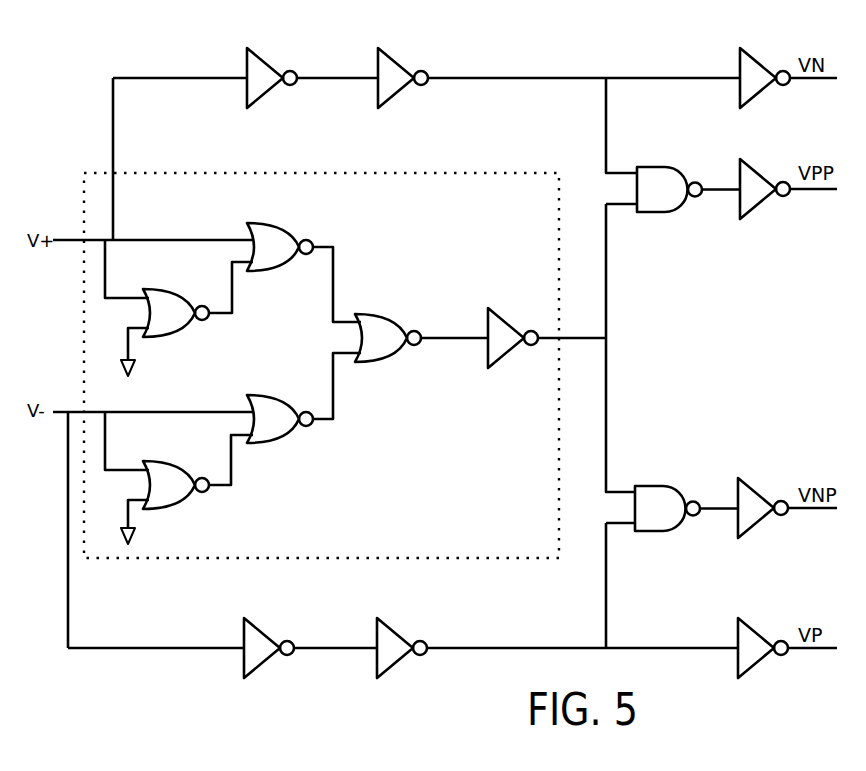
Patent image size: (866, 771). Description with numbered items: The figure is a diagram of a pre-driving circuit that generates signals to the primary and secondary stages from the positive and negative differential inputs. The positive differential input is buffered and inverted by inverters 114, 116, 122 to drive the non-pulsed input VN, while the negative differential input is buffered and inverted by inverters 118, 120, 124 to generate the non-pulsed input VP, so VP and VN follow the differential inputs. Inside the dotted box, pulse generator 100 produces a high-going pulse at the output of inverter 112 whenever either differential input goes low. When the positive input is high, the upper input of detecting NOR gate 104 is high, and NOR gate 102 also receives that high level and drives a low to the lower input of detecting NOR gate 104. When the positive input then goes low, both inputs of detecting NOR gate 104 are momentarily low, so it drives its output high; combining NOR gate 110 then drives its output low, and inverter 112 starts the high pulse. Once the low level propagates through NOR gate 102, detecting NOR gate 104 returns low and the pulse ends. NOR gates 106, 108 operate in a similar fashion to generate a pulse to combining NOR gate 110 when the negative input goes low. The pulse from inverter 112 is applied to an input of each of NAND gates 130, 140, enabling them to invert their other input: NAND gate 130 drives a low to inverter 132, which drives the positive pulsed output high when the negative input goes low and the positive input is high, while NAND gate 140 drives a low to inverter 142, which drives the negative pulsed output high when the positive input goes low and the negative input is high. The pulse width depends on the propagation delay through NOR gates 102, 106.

The pulse generator 100 is at (408, 460).
The NOR gate 102 is at (168, 290).
The detecting NOR gate 104 is at (272, 223).
The NOR gate 106 is at (168, 462).
The NOR gate 108 is at (272, 395).
The combining NOR gate 110 is at (382, 314).
The inverter 112 is at (491, 308).
The inverter 114 is at (250, 48).
The inverter 116 is at (381, 48).
The inverter 118 is at (247, 618).
The inverter 120 is at (380, 618).
The inverter 122 is at (743, 48).
The inverter 124 is at (741, 618).
The NAND gate 130 is at (662, 167).
The inverter 132 is at (743, 159).
The NAND gate 140 is at (660, 486).
The inverter 142 is at (741, 478).